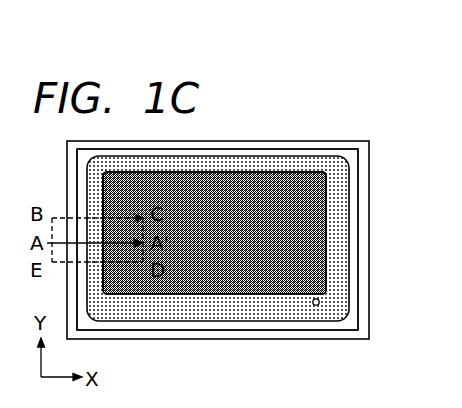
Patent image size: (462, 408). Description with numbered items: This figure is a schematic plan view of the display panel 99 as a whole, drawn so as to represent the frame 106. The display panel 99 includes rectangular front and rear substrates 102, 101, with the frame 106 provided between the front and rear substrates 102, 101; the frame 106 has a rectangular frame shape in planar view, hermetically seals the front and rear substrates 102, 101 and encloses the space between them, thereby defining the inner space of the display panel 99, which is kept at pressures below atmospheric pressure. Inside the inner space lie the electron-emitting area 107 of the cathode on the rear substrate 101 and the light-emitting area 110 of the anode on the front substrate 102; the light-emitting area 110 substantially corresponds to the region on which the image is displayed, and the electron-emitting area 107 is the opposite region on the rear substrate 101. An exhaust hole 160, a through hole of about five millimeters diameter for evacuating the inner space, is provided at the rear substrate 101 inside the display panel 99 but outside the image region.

The display panel 99 is at (261, 133).
The rear substrate 101 is at (349, 141).
The front substrate 102 is at (350, 184).
The frame 106 is at (354, 249).
The electron-emitting area 107 is at (239, 285).
The light-emitting area 110 is at (233, 358).
The exhaust hole 160 is at (319, 300).